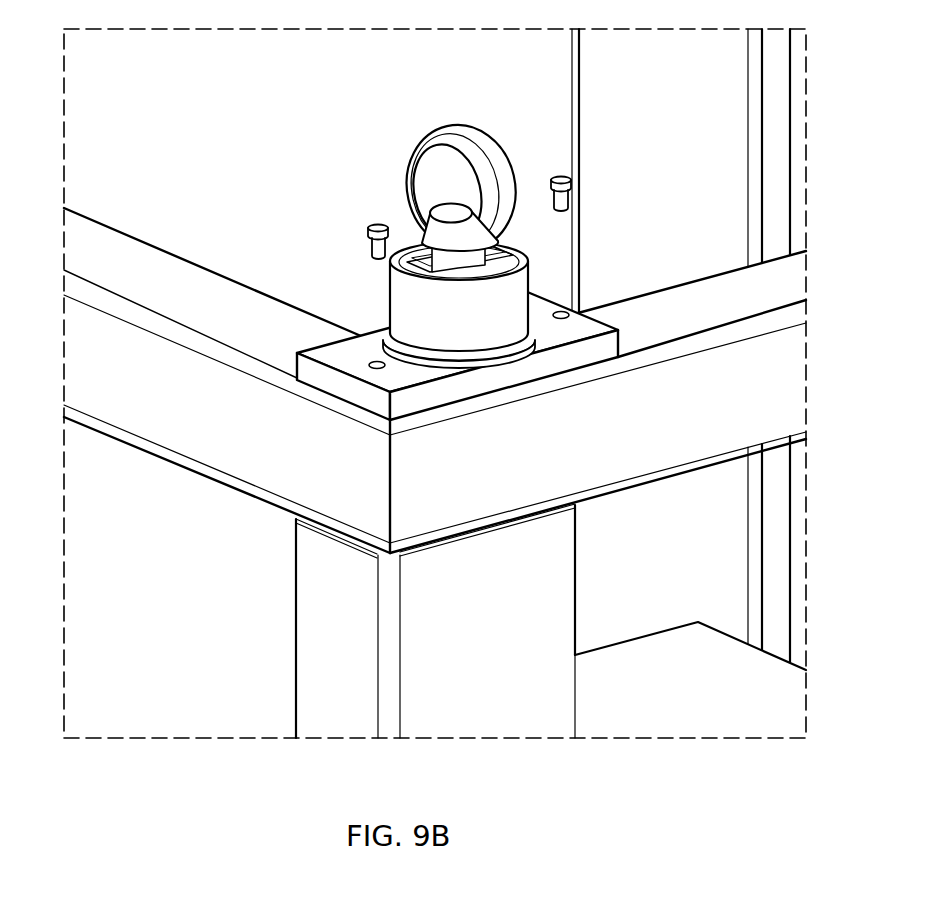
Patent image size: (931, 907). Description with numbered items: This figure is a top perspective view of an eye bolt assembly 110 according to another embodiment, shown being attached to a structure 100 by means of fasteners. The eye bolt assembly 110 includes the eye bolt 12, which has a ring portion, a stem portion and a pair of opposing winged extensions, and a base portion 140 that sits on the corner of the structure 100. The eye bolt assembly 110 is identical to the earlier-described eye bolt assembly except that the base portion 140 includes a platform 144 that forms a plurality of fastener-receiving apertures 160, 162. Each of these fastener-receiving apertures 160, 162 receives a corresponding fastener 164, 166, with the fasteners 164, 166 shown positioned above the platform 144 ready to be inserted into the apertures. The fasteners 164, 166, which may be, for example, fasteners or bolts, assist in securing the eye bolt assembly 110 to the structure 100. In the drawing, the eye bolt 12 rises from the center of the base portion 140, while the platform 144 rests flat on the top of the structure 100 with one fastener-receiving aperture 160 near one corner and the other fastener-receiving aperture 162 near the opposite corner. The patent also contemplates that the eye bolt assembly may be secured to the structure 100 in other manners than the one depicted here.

The structure 100 is at (163, 475).
The eye bolt assembly 110 is at (455, 234).
The eye bolt 12 is at (508, 162).
The base portion 140 is at (532, 257).
The platform 144 is at (578, 341).
The fastener-receiving aperture 160 is at (563, 312).
The fastener-receiving aperture 162 is at (372, 362).
The fastener 164 is at (567, 173).
The fastener 166 is at (375, 221).